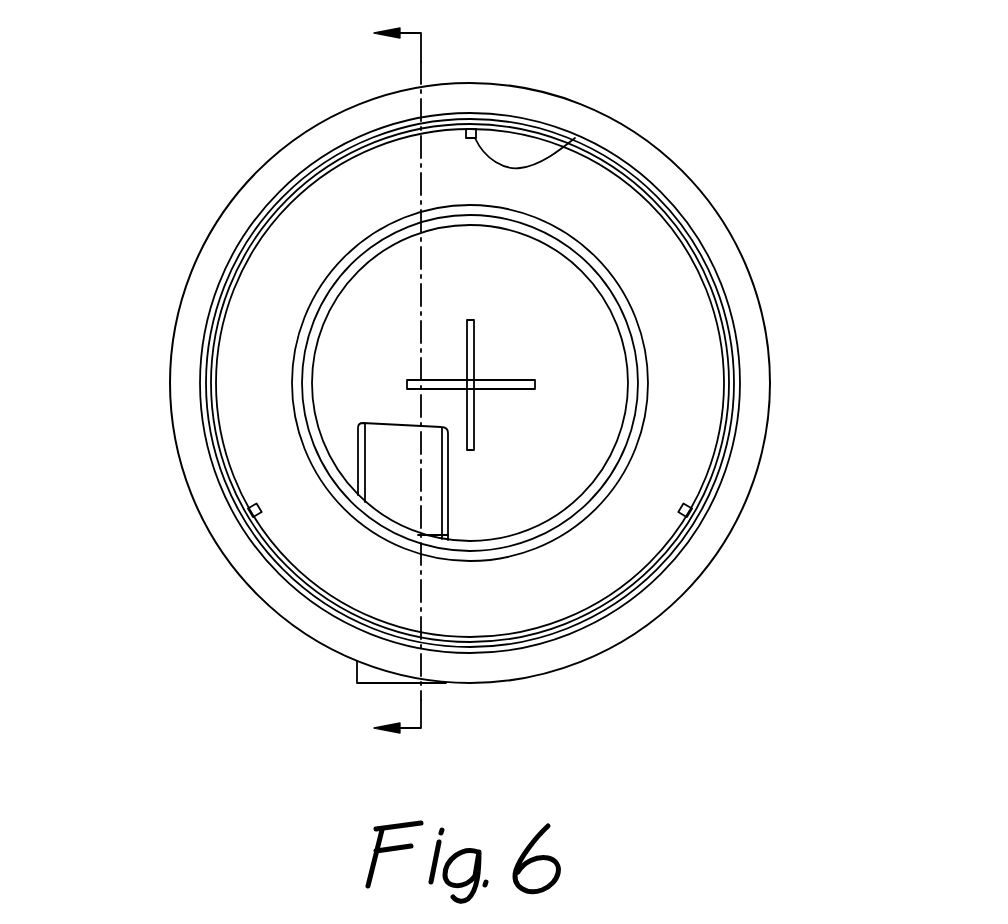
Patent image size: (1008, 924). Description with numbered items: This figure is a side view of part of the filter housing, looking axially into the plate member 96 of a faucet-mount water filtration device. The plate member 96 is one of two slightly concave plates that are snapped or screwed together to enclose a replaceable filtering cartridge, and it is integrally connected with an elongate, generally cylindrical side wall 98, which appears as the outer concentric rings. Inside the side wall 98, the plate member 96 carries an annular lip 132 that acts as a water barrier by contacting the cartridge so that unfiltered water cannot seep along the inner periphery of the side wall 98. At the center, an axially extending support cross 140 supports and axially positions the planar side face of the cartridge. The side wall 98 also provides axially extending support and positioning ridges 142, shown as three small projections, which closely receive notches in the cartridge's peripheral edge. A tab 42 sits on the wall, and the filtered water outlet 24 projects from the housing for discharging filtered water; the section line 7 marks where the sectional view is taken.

The section line 7- 7 is at (377, 379).
The filtered water outlet 24 is at (357, 663).
The locking tab 42 is at (563, 147).
The plate member 96 is at (704, 186).
The side wall portion 98 is at (737, 336).
The annular lip 132 is at (650, 397).
The support cross 140 is at (477, 348).
The support and positioning ridges 142 is at (256, 505).